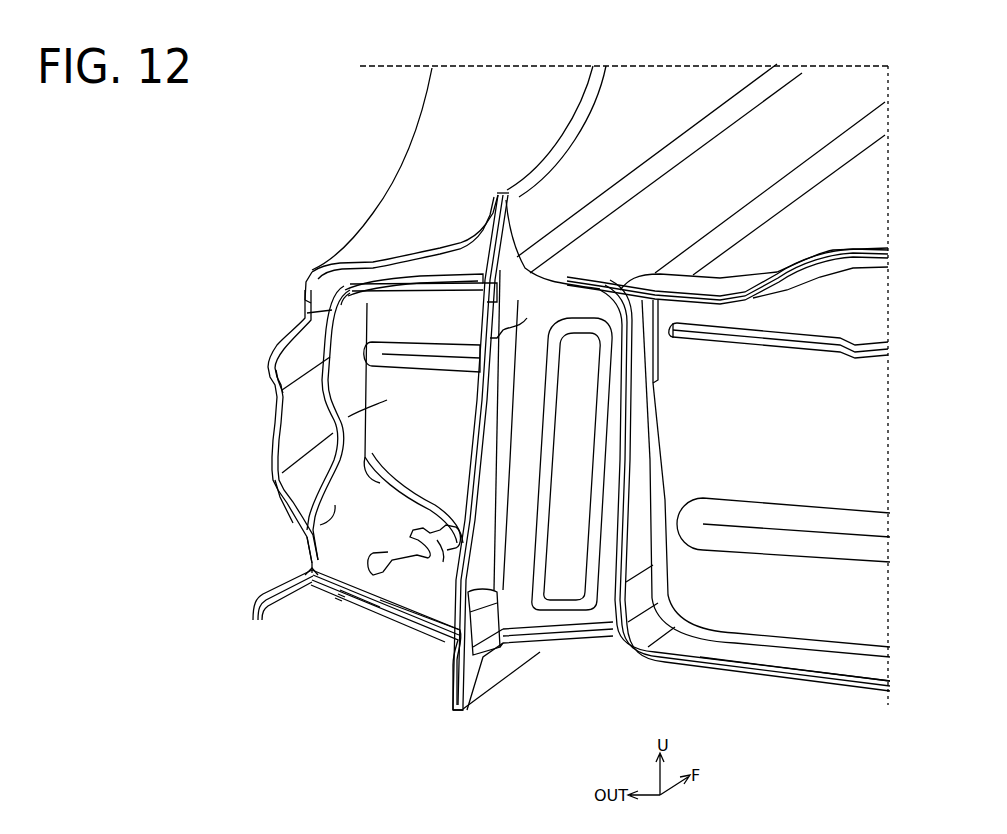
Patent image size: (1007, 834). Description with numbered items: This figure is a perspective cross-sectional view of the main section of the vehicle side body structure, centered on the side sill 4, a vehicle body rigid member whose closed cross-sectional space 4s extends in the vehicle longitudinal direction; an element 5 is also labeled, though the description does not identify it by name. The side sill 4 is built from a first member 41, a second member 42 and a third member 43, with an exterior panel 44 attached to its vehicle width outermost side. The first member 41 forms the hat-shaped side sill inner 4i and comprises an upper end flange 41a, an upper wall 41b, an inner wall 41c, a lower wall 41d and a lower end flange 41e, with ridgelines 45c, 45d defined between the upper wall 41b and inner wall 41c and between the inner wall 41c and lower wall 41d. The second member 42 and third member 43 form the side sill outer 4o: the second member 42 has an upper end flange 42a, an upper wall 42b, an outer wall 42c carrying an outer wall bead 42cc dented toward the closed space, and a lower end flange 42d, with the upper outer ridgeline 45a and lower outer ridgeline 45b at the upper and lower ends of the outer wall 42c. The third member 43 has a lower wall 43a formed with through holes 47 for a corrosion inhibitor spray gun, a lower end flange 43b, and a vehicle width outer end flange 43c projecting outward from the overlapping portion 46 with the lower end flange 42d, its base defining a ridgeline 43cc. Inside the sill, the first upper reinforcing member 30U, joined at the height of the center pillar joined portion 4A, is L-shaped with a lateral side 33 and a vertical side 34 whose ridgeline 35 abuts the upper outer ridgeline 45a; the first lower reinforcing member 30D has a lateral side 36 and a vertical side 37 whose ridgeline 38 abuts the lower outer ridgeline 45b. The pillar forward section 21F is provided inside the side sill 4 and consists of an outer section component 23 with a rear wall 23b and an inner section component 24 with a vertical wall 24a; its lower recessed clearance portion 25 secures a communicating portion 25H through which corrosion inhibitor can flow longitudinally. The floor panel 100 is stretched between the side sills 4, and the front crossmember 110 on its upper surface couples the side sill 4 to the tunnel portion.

The side sill 4 is at (532, 738).
The center pillar joined portion 4A is at (296, 262).
The side sill inner 4i is at (539, 688).
The side sill outer 4o is at (355, 680).
The closed cross-sectional space 4s is at (572, 557).
The front pillar 5 is at (382, 124).
The pillar forward section 21F is at (605, 645).
The outer section component 23 is at (357, 370).
The rear wall 23b is at (468, 395).
The inner section component 24 is at (522, 640).
The vertical wall 24a is at (582, 395).
The recessed clearance portion 25 is at (394, 522).
The communicating portion 25H is at (396, 516).
The first lower reinforcing member 30D is at (312, 507).
The first upper reinforcing member 30U is at (360, 304).
The lateral side 33 is at (350, 293).
The vertical side 34 is at (340, 332).
The ridgeline 35 is at (307, 313).
The lateral side 36 is at (341, 597).
The vertical side 37 is at (325, 524).
The ridgeline 38 is at (295, 530).
The first member 41 is at (551, 659).
The upper end flange 41a is at (512, 213).
The upper wall 41b is at (553, 277).
The inner wall 41c is at (628, 458).
The lower wall 41d is at (571, 648).
The lower end flange 41e is at (472, 700).
The second member 42 is at (332, 453).
The upper end flange 42a is at (498, 216).
The upper wall 42b is at (440, 272).
The outer wall 42c is at (329, 377).
The outer wall bead 42cc is at (362, 452).
The lower end flange 42d is at (357, 603).
The third member 43 is at (432, 644).
The lower wall 43a is at (410, 620).
The lower end flange 43b is at (452, 688).
The vehicle width outer end flange 43c is at (288, 597).
The ridgeline 43cc is at (308, 570).
The exterior panel 44 is at (303, 307).
The upper outer ridgeline 45a is at (353, 287).
The lower outer ridgeline 45b is at (307, 562).
The ridgeline 45c is at (633, 287).
The ridgeline 45d is at (610, 640).
The overlapping portion 46 is at (340, 602).
The through hole 47 is at (442, 553).
The floor panel 100 is at (773, 673).
The front crossmember 110 is at (862, 326).